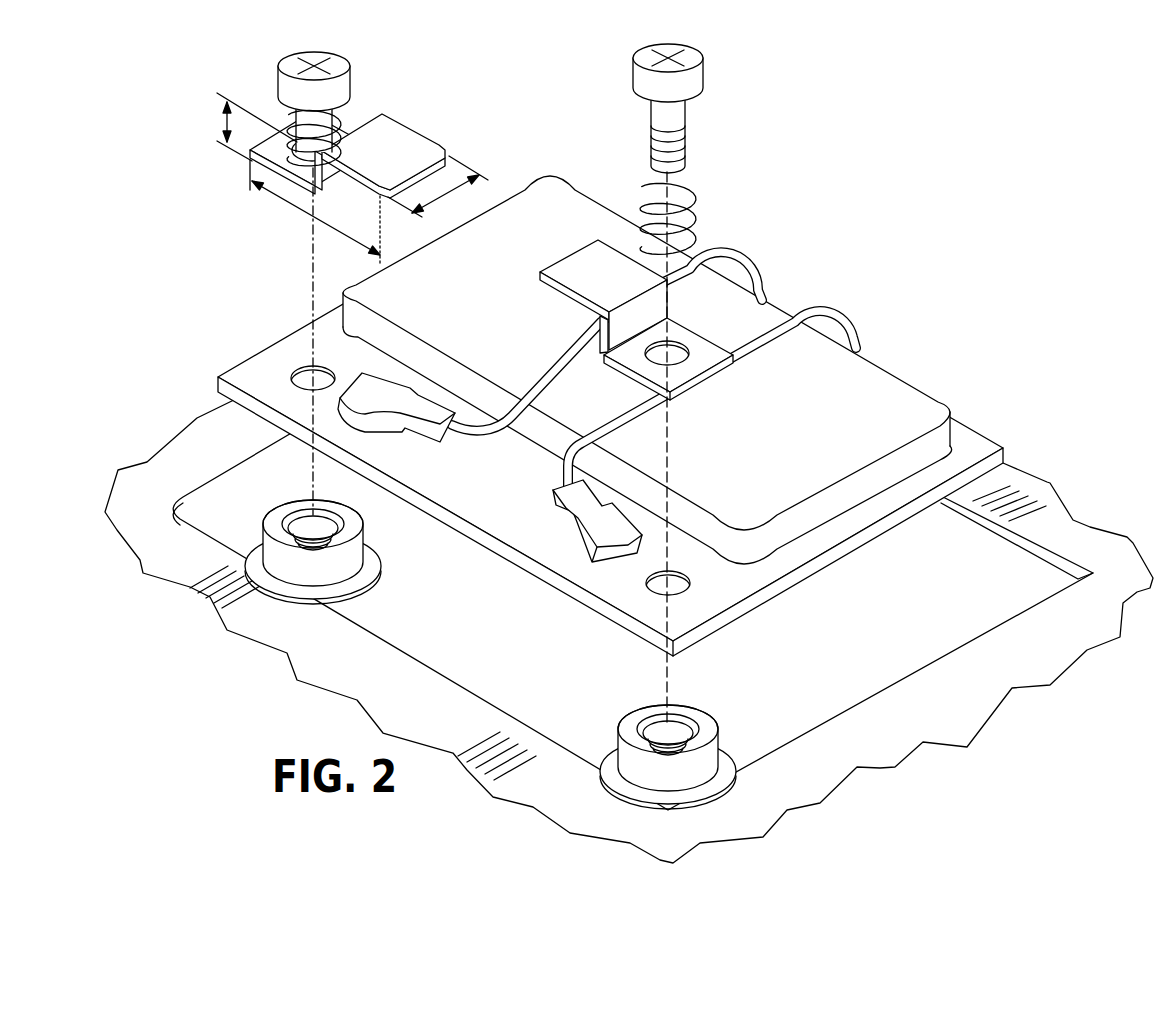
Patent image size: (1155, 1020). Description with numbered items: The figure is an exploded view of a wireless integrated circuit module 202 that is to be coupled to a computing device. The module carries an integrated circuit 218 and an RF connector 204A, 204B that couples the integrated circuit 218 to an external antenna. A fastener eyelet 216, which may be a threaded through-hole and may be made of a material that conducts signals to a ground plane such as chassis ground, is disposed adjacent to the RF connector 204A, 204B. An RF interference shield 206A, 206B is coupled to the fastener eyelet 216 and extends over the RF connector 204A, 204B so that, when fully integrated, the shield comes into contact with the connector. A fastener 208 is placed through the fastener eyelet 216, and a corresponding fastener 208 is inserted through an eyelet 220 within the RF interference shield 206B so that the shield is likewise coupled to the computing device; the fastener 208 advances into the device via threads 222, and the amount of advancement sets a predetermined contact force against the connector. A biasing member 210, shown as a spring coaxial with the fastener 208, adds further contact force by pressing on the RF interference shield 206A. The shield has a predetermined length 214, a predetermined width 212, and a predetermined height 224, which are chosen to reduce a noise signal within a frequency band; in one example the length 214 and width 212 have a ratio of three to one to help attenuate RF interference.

The wireless integrated circuit module 202 is at (980, 428).
The RF connector 204A is at (420, 438).
The RF connector 204B is at (553, 500).
The RF interference shield 206A is at (414, 124).
The RF interference shield 206B is at (600, 320).
The fastener 208 is at (278, 63).
The biasing member 210 is at (297, 165).
The predetermined width 212 is at (452, 196).
The predetermined length 214 is at (307, 212).
The fastener eyelet 216 is at (298, 372).
The integrated circuit 218 is at (895, 365).
The eyelet 220 is at (685, 346).
The threads 222 is at (280, 504).
The predetermined height 224 is at (226, 122).